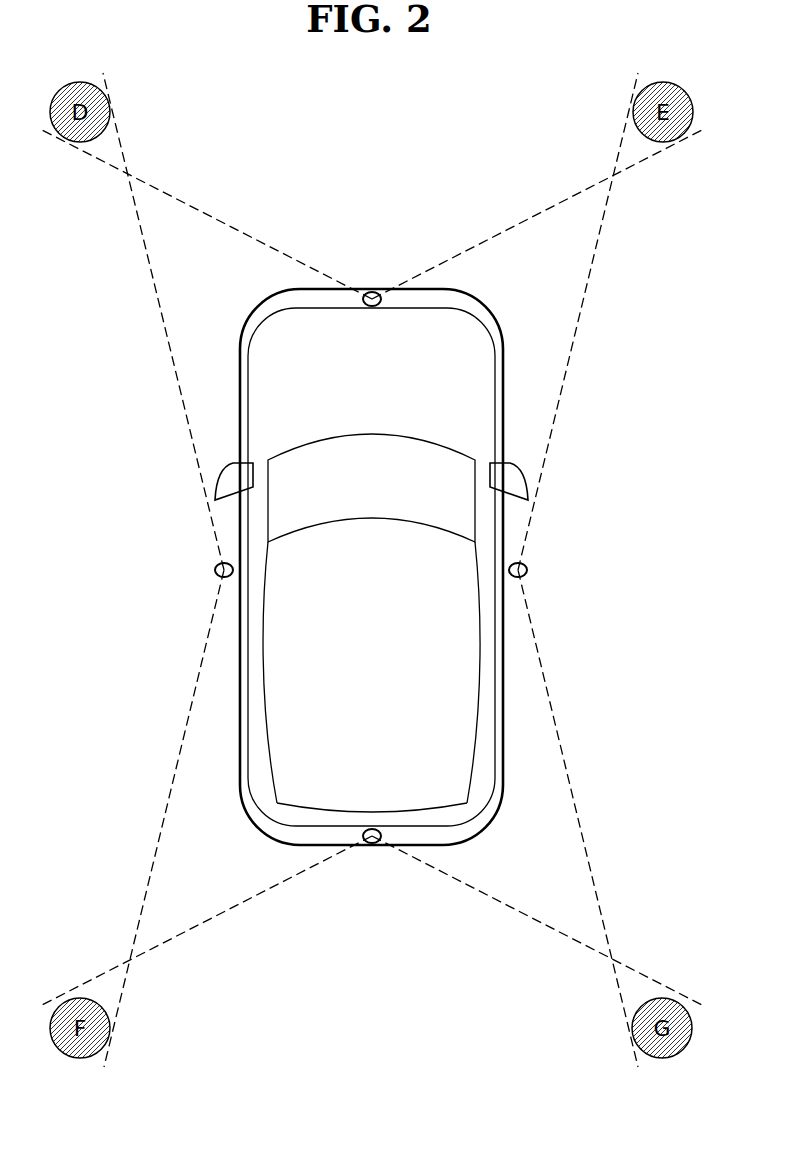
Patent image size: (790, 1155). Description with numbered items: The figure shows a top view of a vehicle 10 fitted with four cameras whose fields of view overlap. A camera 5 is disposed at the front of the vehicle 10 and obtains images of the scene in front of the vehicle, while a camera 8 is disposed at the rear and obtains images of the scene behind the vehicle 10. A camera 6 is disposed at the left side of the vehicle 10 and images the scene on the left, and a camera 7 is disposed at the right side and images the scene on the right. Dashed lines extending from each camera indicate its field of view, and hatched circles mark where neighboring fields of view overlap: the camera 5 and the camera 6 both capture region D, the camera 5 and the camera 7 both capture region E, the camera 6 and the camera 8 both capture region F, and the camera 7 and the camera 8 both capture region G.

The vehicle 10 is at (245, 333).
The camera 5 is at (371, 291).
The camera 6 is at (215, 568).
The camera 7 is at (528, 568).
The camera 8 is at (372, 845).